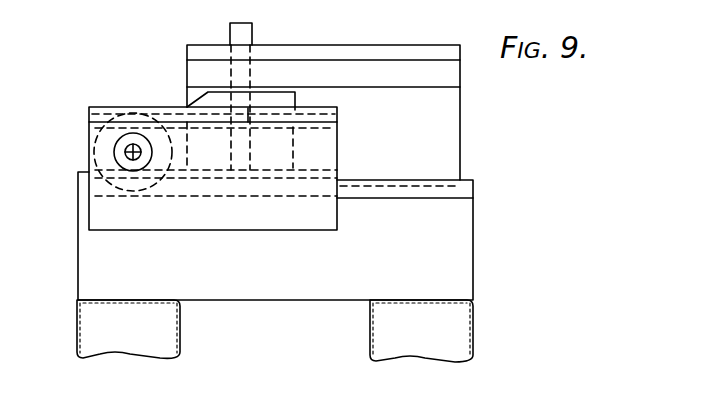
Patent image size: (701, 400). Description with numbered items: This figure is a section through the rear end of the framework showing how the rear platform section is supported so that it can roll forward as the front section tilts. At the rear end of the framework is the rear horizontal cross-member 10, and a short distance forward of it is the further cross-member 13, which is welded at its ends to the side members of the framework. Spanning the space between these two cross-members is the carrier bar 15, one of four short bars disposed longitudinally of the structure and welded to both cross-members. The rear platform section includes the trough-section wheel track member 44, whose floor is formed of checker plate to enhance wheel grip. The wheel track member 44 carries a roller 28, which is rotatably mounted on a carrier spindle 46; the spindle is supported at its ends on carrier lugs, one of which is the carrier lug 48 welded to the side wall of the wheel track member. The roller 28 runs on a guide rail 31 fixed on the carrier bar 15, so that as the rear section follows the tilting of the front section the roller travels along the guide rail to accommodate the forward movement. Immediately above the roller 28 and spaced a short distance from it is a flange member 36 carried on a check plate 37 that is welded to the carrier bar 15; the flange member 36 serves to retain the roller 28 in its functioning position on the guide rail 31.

The rear horizontal cross-member 10 is at (181, 337).
The further cross-member 13 is at (474, 320).
The carrier bar 15 is at (478, 229).
The roller 28 is at (97, 126).
The guide rail 31 is at (318, 209).
The flange member 36 is at (110, 96).
The check plate 37 is at (202, 222).
The wheel track member 44 is at (435, 118).
The carrier spindle 46 is at (125, 150).
The carrier lug 48 is at (283, 102).